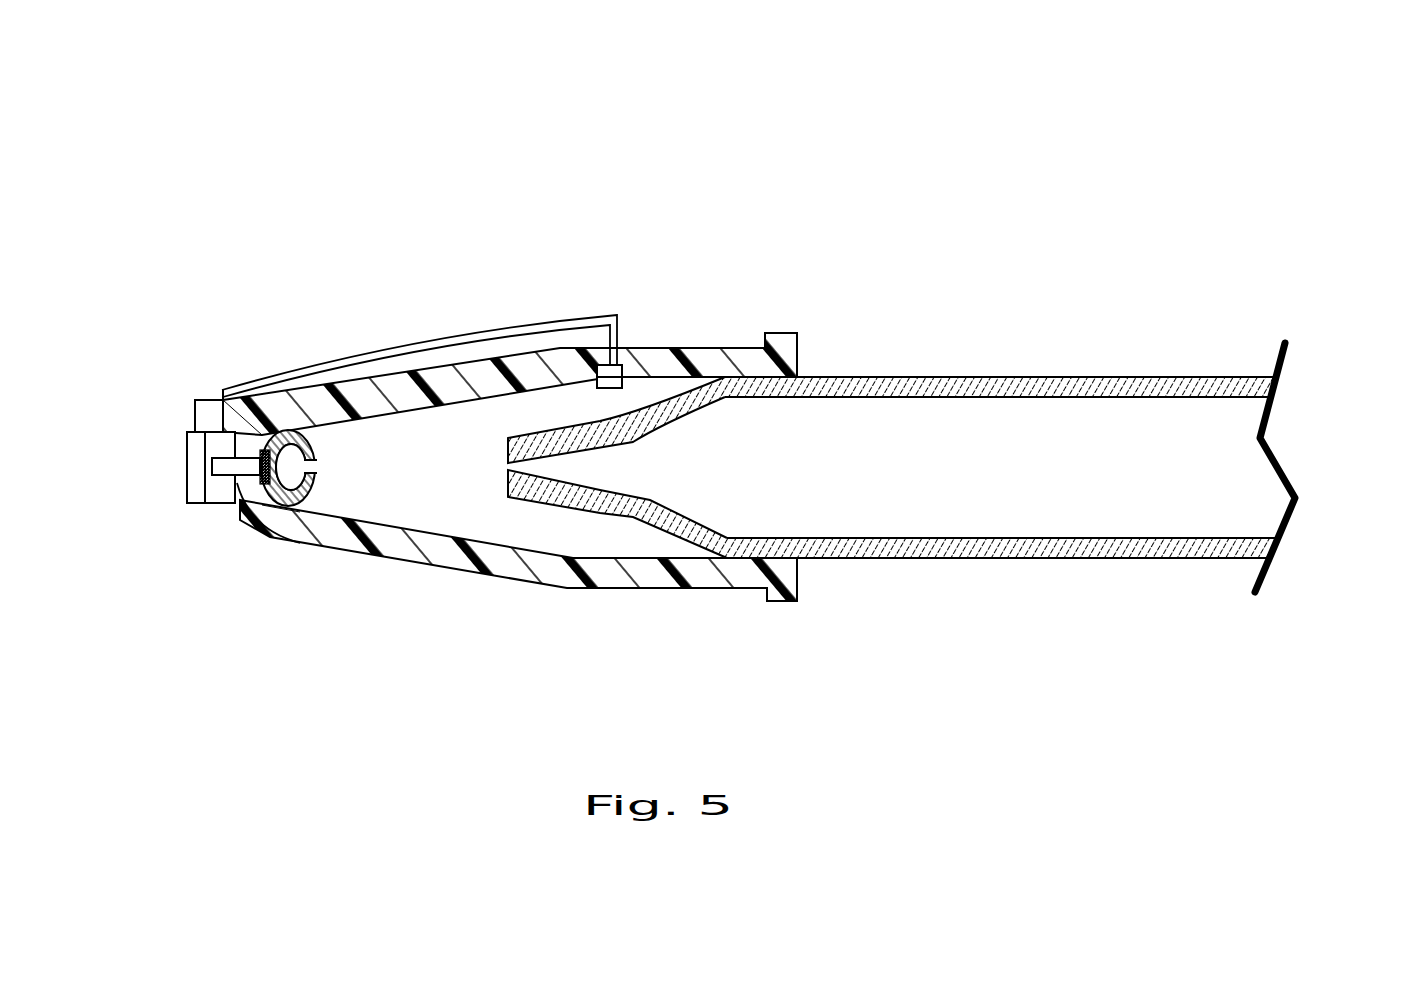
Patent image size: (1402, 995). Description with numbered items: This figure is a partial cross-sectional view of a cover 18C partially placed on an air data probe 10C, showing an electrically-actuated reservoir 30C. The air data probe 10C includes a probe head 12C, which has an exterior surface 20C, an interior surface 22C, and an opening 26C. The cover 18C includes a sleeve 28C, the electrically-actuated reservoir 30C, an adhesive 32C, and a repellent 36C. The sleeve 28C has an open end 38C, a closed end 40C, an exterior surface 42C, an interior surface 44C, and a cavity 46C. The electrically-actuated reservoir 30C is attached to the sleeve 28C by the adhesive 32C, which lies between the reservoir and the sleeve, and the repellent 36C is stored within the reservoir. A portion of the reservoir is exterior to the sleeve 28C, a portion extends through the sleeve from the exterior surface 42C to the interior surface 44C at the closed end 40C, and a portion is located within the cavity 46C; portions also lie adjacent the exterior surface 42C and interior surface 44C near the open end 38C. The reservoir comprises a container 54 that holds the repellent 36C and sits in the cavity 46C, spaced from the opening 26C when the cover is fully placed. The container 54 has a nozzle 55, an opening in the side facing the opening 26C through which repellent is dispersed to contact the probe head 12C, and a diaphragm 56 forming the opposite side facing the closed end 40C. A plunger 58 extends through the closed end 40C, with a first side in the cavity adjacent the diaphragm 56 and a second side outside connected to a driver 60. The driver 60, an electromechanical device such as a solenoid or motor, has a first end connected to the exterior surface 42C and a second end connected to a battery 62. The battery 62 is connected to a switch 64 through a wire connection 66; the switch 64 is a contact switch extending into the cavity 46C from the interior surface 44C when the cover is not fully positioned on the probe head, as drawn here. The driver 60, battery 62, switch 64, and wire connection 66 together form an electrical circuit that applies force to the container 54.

The air data probe 10C is at (997, 160).
The probe head 12C is at (1085, 333).
The cover 18C is at (552, 276).
The exterior surface 20C is at (1045, 560).
The interior surface 22C is at (1222, 535).
The opening 26C is at (507, 466).
The sleeve 28C is at (747, 577).
The electrically-actuated reservoir 30C is at (158, 461).
The adhesive 32C is at (275, 438).
The repellent 36C is at (268, 450).
The open end 38C is at (797, 572).
The closed end 40C is at (258, 420).
The exterior surface 42C is at (563, 590).
The interior surface 44C is at (538, 384).
The cavity 46C is at (643, 543).
The container 54 is at (303, 492).
The nozzle 55 is at (290, 465).
The diaphragm 56 is at (245, 473).
The plunger 58 is at (220, 470).
The driver 60 is at (220, 490).
The battery 62 is at (193, 485).
The switch 64 is at (615, 380).
The wire connection 66 is at (370, 360).